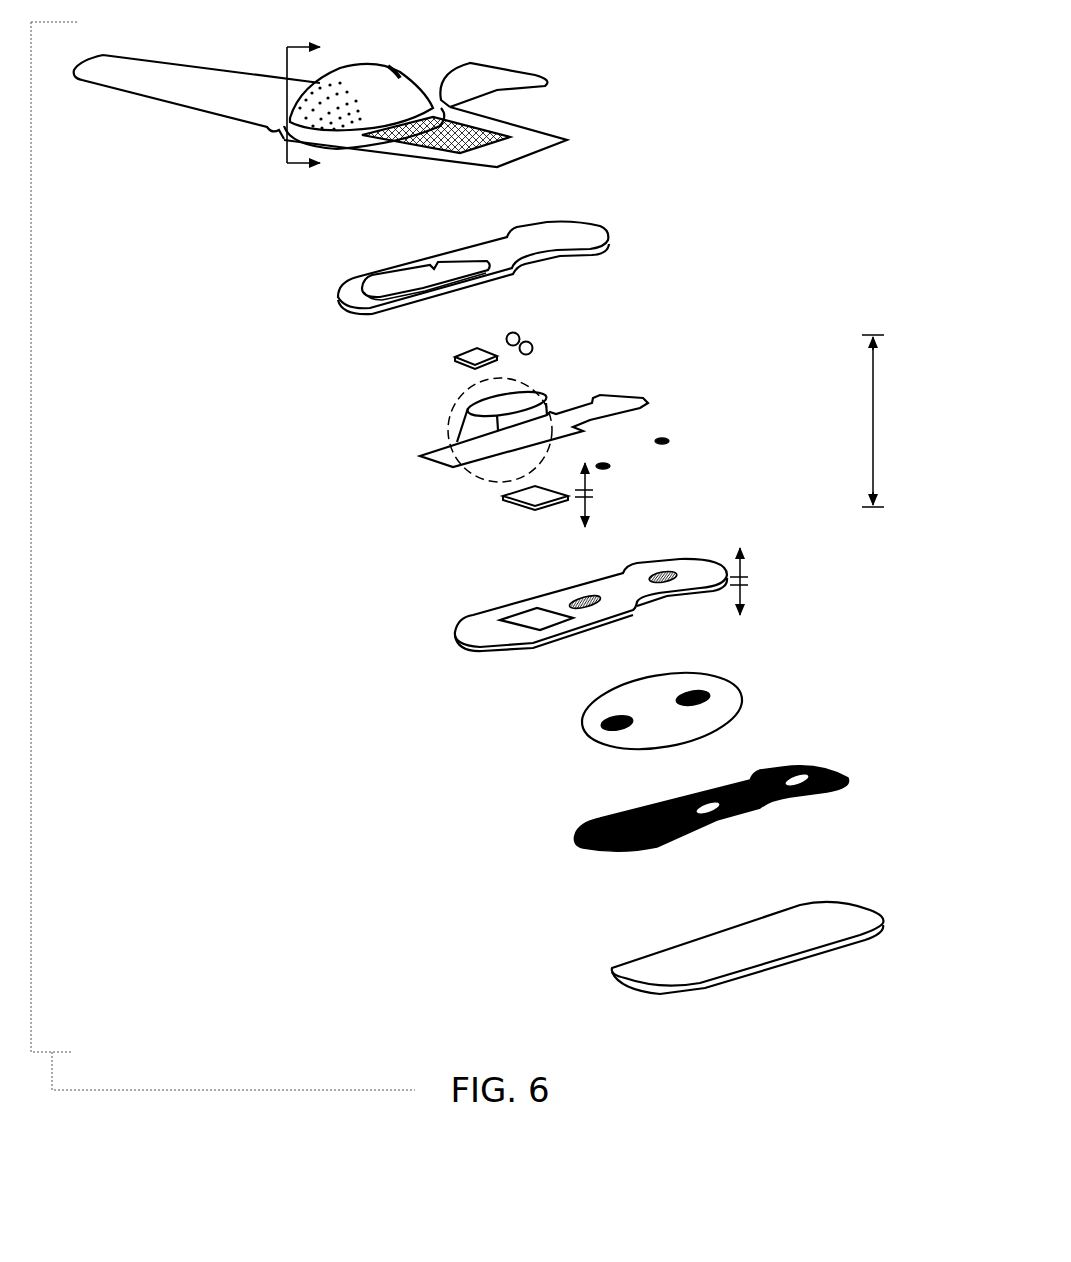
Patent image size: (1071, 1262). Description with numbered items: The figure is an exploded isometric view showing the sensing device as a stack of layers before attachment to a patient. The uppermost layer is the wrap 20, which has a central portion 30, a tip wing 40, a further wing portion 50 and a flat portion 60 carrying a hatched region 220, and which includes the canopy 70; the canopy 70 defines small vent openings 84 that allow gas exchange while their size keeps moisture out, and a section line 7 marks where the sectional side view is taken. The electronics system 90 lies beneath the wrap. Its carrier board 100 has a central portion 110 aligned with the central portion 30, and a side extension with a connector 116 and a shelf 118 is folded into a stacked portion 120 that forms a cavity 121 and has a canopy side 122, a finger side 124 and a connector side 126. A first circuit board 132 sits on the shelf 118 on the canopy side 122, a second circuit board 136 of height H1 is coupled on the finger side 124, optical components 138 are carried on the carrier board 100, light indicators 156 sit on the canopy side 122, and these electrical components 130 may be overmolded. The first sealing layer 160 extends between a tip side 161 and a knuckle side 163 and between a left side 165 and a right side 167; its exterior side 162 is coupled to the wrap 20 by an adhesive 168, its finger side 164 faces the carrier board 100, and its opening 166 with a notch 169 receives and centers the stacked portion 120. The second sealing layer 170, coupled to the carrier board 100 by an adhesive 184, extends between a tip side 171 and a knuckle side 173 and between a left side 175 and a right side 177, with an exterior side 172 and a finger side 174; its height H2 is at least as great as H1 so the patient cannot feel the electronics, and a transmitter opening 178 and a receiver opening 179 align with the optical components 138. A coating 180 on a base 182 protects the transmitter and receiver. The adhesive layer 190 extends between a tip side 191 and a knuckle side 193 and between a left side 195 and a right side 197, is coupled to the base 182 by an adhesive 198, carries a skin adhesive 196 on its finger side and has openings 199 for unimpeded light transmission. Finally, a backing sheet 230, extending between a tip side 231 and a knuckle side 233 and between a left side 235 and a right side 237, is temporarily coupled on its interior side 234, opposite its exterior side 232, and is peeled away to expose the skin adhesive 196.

The section line 7- 7 is at (314, 106).
The wrap 20 is at (328, 119).
The central portion 30 is at (282, 133).
The tip wing 40 is at (500, 78).
The strap 50 is at (135, 80).
The base plate 60 is at (538, 133).
The canopy 70 is at (375, 65).
The vent openings 84 is at (348, 93).
The electronics system 90 is at (877, 420).
The carrier board 100 is at (553, 423).
The central portion 110 is at (517, 443).
The connector 116 is at (477, 425).
The shelf 118 is at (527, 392).
The stacked portion 120 is at (443, 455).
The cavity 121 is at (600, 398).
The canopy side 122 is at (522, 377).
The finger side 124 is at (455, 418).
The connector side 126 is at (467, 468).
The electrical components 130 is at (680, 463).
The first circuit board 132 is at (462, 360).
The second circuit board 136 is at (537, 493).
The optical components 138 is at (610, 458).
The light indicators 156 is at (520, 338).
The first sealing layer 160 is at (454, 281).
The tip side 161 is at (612, 222).
The exterior side 162 is at (578, 230).
The knuckle side 163 is at (338, 296).
The finger side 164 is at (378, 317).
The left side 165 is at (490, 241).
The opening 166 is at (420, 279).
The right side 167 is at (570, 255).
The adhesive 168 is at (540, 228).
The notch 169 is at (360, 274).
The second sealing layer 170 is at (613, 618).
The tip side 171 is at (760, 550).
The exterior side 172 is at (700, 572).
The knuckle side 173 is at (460, 642).
The finger side 174 is at (705, 598).
The left side 175 is at (477, 612).
The right side 177 is at (627, 618).
The transmitter opening 178 is at (587, 618).
The receiver opening 179 is at (660, 574).
The coating 180 is at (655, 719).
The base 182 is at (593, 722).
The adhesive 184 is at (672, 573).
The adhesive layer 190 is at (684, 821).
The tip side 191 is at (741, 797).
The knuckle side 193 is at (583, 848).
The left side 195 is at (637, 808).
The skin adhesive 196 is at (650, 853).
The right side 197 is at (713, 827).
The adhesive 198 is at (782, 767).
The openings 199 is at (797, 802).
The mesh 220 is at (405, 152).
The backing sheet 230 is at (734, 949).
The tip side 231 is at (877, 907).
The exterior side 232 is at (767, 967).
The knuckle side 233 is at (643, 985).
The interior side 234 is at (835, 917).
The left side 235 is at (700, 935).
The right side 237 is at (860, 937).
The height H1 is at (596, 493).
The height H2 is at (750, 580).